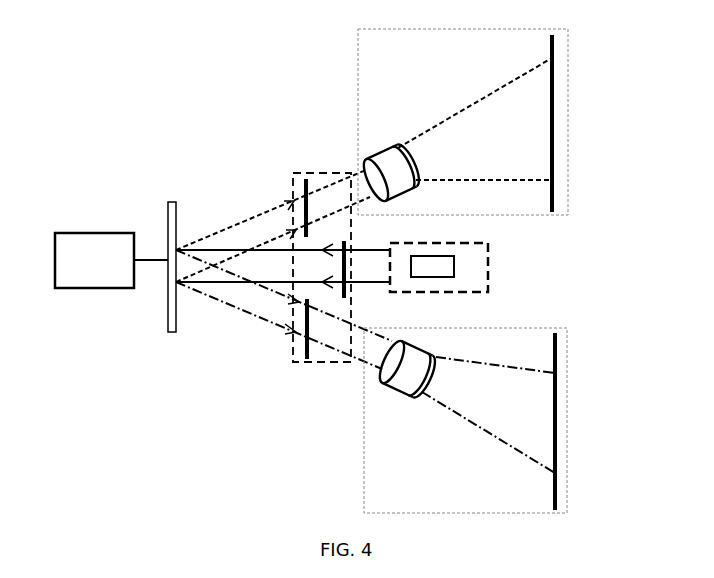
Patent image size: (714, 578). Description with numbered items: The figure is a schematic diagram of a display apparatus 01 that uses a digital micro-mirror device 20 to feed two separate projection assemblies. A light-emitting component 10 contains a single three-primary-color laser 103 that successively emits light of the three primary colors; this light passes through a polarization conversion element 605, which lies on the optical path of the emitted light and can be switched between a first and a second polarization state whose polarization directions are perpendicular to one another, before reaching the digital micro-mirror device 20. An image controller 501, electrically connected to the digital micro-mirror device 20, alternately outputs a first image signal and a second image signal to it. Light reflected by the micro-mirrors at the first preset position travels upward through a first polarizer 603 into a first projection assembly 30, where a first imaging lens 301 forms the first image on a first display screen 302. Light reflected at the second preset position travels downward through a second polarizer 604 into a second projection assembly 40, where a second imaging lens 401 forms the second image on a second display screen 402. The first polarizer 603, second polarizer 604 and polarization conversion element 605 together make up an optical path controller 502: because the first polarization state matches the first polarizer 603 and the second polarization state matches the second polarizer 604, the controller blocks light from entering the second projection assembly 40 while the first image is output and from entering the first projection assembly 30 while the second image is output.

The display apparatus 01 is at (117, 129).
The image controller 501 is at (72, 240).
The digital micro-mirror device 20 is at (168, 325).
The optical path controller 502 is at (310, 363).
The first polarizer 603 is at (304, 205).
The second polarizer 604 is at (305, 330).
The polarization conversion element 605 is at (348, 268).
The first projection assembly 30 is at (380, 81).
The first imaging lens 301 is at (388, 160).
The first display screen 302 is at (554, 137).
The light-emitting component 10 is at (490, 268).
The laser 103 is at (445, 277).
The second projection assembly 40 is at (387, 443).
The second imaging lens 401 is at (390, 380).
The second display screen 402 is at (557, 417).